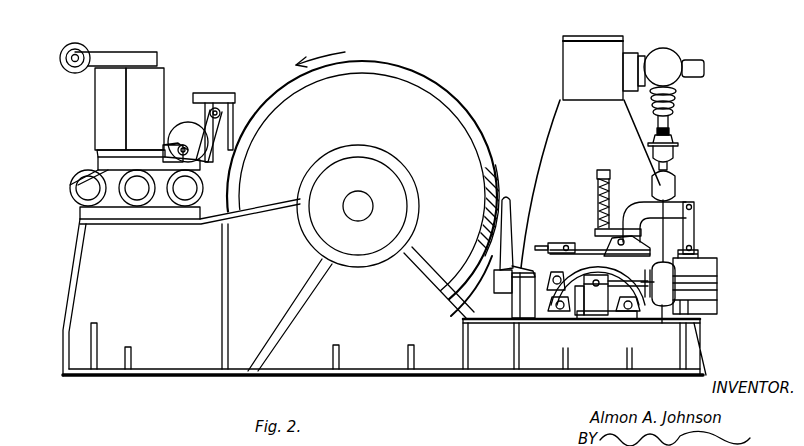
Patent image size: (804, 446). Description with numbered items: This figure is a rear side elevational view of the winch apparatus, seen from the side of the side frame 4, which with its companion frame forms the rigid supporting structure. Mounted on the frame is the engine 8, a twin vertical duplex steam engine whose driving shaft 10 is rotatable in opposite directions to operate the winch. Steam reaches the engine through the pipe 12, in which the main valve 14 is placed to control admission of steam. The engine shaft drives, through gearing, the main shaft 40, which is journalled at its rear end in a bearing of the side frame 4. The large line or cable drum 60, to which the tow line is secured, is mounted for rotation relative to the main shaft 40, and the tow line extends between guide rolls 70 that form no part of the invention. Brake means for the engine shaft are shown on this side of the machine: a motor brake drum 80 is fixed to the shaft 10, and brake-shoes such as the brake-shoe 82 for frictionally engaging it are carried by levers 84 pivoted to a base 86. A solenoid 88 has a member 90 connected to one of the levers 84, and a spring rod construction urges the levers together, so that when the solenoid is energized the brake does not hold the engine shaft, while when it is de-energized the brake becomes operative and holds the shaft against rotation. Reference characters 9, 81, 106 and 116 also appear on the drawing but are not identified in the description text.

The side frame 4 is at (436, 356).
The engine 8 is at (530, 99).
The control rod 9 is at (645, 89).
The driving shaft 10 is at (595, 278).
The pipe 12 is at (699, 66).
The main valve 14 is at (668, 58).
The main shaft 40 is at (358, 218).
The line or cable drum 60 is at (387, 93).
The guide rolls 70 is at (147, 131).
The motor brake drum 80 is at (575, 252).
The bracket 81 is at (630, 260).
The brake-shoe 82 is at (561, 313).
The lever 84 is at (562, 275).
The base 86 is at (603, 201).
The solenoid 88 is at (507, 200).
The member 90 is at (512, 314).
The motor 106 is at (708, 301).
The piston block 116 is at (599, 320).